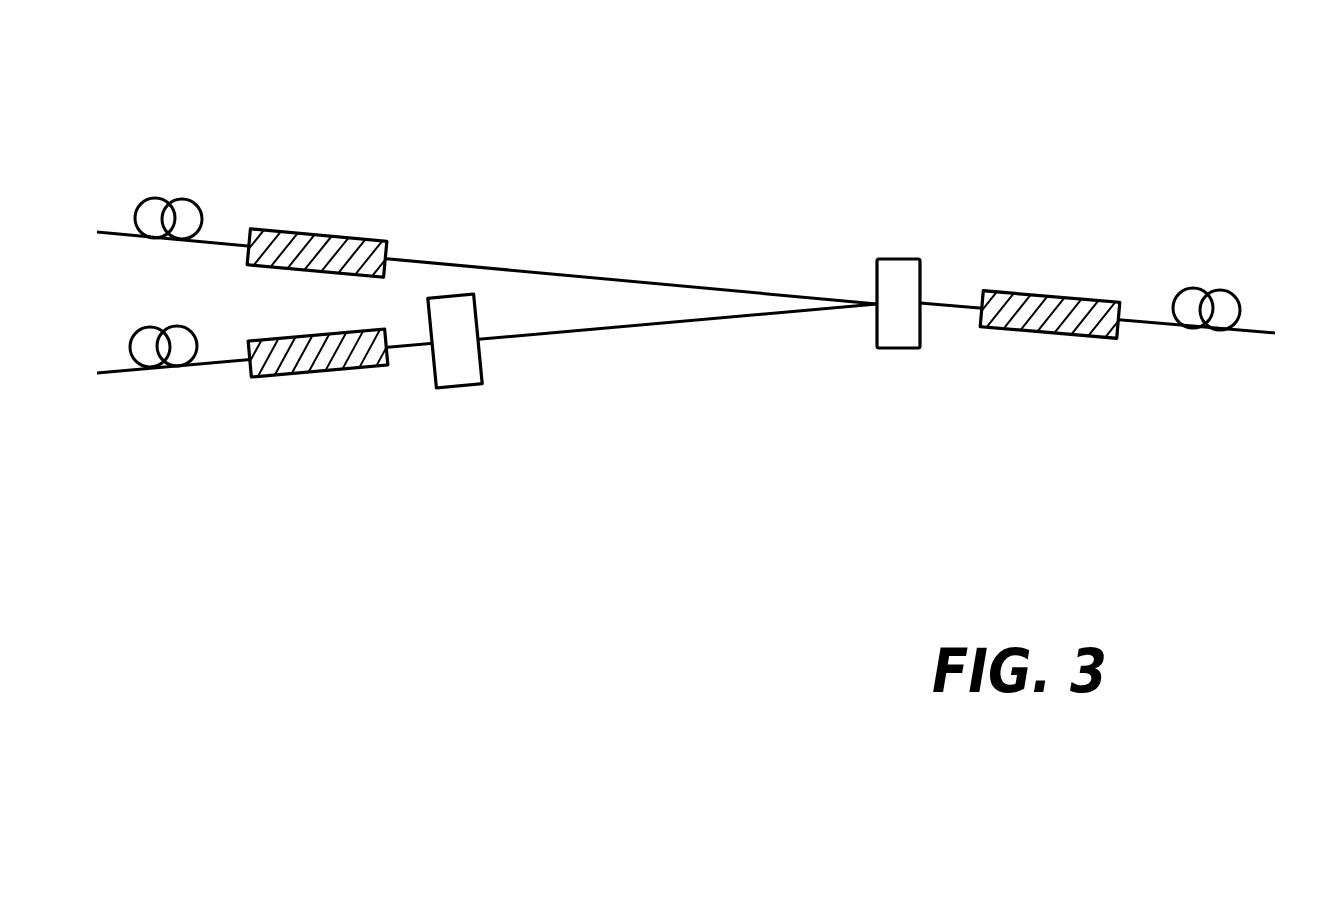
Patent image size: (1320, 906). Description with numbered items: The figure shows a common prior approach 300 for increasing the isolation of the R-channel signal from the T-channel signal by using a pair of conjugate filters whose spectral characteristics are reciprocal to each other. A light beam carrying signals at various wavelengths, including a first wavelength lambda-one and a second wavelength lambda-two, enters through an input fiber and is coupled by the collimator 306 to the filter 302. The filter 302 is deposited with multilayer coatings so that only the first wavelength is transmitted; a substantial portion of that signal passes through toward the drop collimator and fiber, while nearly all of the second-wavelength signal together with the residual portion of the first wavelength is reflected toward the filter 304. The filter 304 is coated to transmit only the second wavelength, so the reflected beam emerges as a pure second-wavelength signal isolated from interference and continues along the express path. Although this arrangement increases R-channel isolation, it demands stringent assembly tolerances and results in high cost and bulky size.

The optical add/drop module 300 is at (676, 235).
The filter 302 is at (894, 326).
The filter 304 is at (458, 366).
The collimator 306 is at (318, 211).